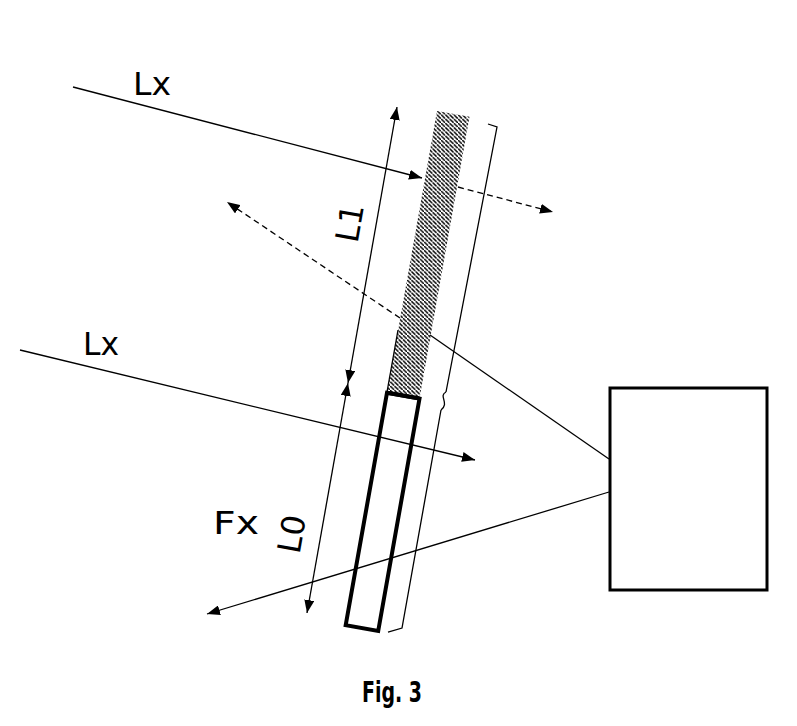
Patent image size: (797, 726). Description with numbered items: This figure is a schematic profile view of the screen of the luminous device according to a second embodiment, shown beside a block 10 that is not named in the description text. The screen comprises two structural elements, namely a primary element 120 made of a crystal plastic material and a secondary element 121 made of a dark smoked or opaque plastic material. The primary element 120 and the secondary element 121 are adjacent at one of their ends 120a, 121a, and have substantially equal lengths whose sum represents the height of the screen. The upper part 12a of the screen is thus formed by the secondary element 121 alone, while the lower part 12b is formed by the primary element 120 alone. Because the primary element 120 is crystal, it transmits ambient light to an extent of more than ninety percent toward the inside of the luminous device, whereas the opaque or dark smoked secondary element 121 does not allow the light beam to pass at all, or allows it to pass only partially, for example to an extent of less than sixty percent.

The object / light source 10 is at (688, 489).
The upper part 12a is at (473, 268).
The lower part 12b is at (423, 518).
The primary element 120 is at (368, 532).
The end of the primary element 120a is at (393, 397).
The secondary element 121 is at (452, 148).
The end of the secondary element 121a is at (398, 368).